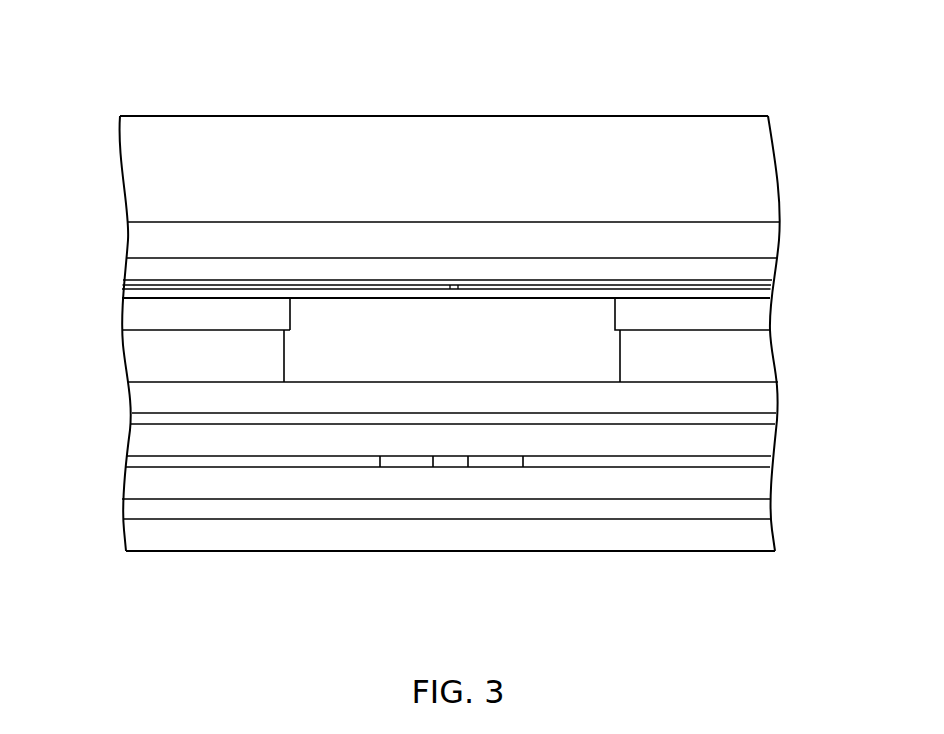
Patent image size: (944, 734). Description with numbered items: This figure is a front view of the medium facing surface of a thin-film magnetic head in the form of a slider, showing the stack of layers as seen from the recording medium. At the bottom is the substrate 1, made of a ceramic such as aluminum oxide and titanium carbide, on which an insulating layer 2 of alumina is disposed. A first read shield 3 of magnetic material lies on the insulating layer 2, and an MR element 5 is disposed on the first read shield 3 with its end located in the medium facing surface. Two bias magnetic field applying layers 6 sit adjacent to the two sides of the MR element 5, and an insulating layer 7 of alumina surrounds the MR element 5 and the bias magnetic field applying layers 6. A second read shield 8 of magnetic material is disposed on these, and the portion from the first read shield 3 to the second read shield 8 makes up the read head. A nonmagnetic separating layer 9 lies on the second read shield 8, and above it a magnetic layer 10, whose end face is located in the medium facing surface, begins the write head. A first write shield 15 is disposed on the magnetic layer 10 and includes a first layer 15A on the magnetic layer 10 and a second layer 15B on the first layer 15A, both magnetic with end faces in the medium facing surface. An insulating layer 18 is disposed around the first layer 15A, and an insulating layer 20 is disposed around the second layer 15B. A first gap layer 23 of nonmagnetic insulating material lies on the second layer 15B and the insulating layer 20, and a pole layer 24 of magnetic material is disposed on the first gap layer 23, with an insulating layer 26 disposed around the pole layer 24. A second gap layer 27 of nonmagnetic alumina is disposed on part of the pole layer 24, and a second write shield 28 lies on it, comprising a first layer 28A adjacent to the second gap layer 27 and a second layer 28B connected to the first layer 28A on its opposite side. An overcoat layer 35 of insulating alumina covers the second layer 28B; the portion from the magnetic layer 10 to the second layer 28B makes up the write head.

The substrate 1 is at (195, 548).
The insulating layer 2 is at (250, 512).
The first read shield 3 is at (298, 494).
The MR element 5 is at (450, 462).
The bias magnetic field applying layers 6 is at (400, 462).
The insulating layer 7 is at (345, 462).
The second read shield 8 is at (601, 447).
The separating layer 9 is at (641, 420).
The magnetic layer 10 is at (689, 408).
The first write shield 15 is at (764, 340).
The first layer 15A is at (618, 357).
The second layer 15B is at (614, 314).
The insulating layer 18 is at (122, 355).
The insulating layer 20 is at (122, 316).
The first gap layer 23 is at (122, 294).
The pole layer 24 is at (453, 284).
The insulating layer 26 is at (771, 287).
The second gap layer 27 is at (538, 282).
The second write shield 28 is at (453, 135).
The first layer 28A is at (593, 268).
The second layer 28B is at (637, 222).
The overcoat layer 35 is at (700, 120).